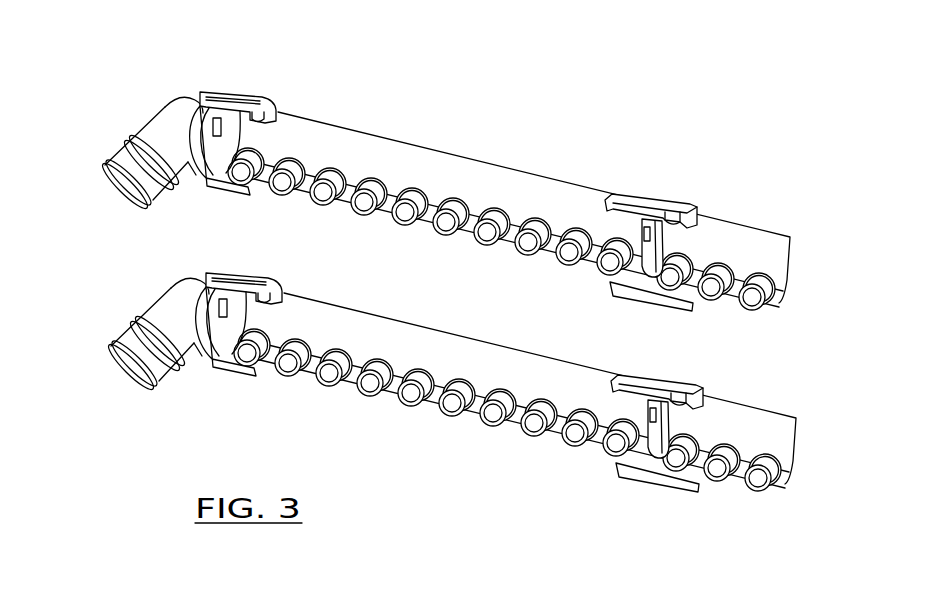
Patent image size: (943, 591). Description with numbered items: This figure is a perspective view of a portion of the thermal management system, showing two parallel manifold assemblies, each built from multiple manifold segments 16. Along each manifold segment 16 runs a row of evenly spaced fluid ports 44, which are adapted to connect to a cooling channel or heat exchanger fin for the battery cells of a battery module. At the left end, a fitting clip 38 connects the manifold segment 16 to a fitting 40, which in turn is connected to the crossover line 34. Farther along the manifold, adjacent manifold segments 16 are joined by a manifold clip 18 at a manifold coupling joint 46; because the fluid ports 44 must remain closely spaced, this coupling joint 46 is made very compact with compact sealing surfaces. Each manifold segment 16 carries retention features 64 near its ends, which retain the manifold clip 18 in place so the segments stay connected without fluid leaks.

The manifold segment 16 is at (530, 297).
The manifold clip 18 is at (654, 299).
The crossover line 34 is at (118, 250).
The fitting clip 38 is at (236, 205).
The fitting 40 is at (171, 200).
The fluid port 44 is at (524, 336).
The manifold coupling joint 46 is at (653, 404).
The retention feature 64 is at (502, 233).